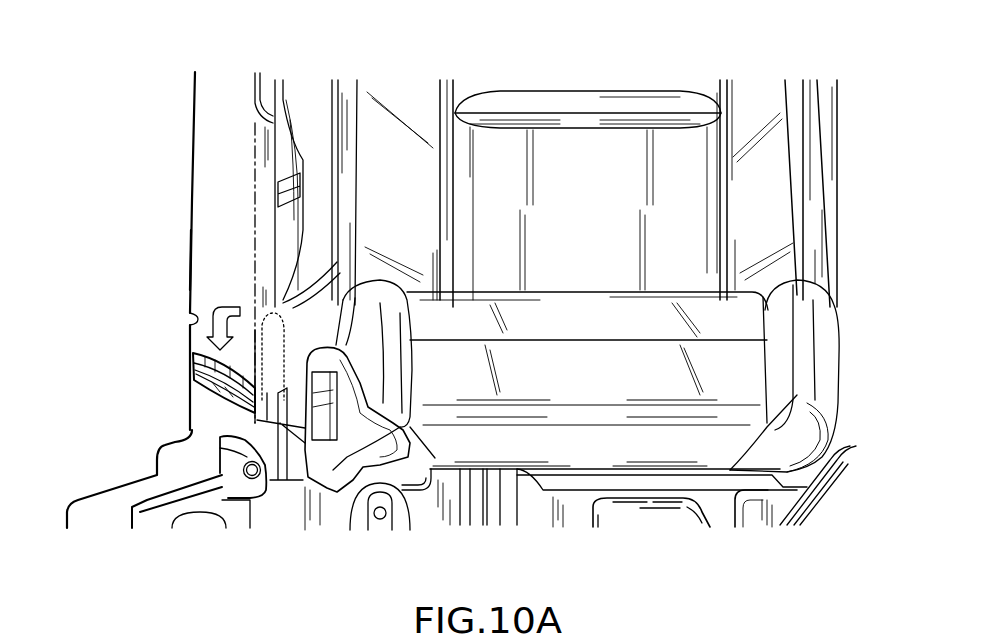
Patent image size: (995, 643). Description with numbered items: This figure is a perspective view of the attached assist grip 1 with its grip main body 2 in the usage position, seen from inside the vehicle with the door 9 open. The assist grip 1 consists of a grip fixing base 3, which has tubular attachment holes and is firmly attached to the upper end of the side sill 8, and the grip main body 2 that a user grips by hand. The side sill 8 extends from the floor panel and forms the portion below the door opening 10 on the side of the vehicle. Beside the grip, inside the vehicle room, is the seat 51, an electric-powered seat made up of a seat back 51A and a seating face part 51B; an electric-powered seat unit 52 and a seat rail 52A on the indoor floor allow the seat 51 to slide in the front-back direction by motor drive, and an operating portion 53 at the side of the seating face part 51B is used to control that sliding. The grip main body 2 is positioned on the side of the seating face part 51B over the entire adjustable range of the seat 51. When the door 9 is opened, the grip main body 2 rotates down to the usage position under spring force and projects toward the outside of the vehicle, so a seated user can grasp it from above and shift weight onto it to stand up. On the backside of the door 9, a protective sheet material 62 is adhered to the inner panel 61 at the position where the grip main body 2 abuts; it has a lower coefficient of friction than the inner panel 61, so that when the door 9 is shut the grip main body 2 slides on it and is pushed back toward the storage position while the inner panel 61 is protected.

The door 9 is at (178, 113).
The door opening 10 is at (248, 190).
The inner panel 61 is at (188, 262).
The protective sheet material 62 is at (187, 315).
The assist grip 1 is at (186, 369).
The grip main body 2 is at (207, 388).
The side sill 8 is at (238, 468).
The grip fixing base 3 is at (275, 465).
The operating portion 53 is at (314, 437).
The electric-powered seat unit 52 is at (640, 512).
The seat rail 52A is at (755, 513).
The seat 51 is at (529, 82).
The seat back 51A is at (743, 127).
The seating face part 51B is at (707, 376).